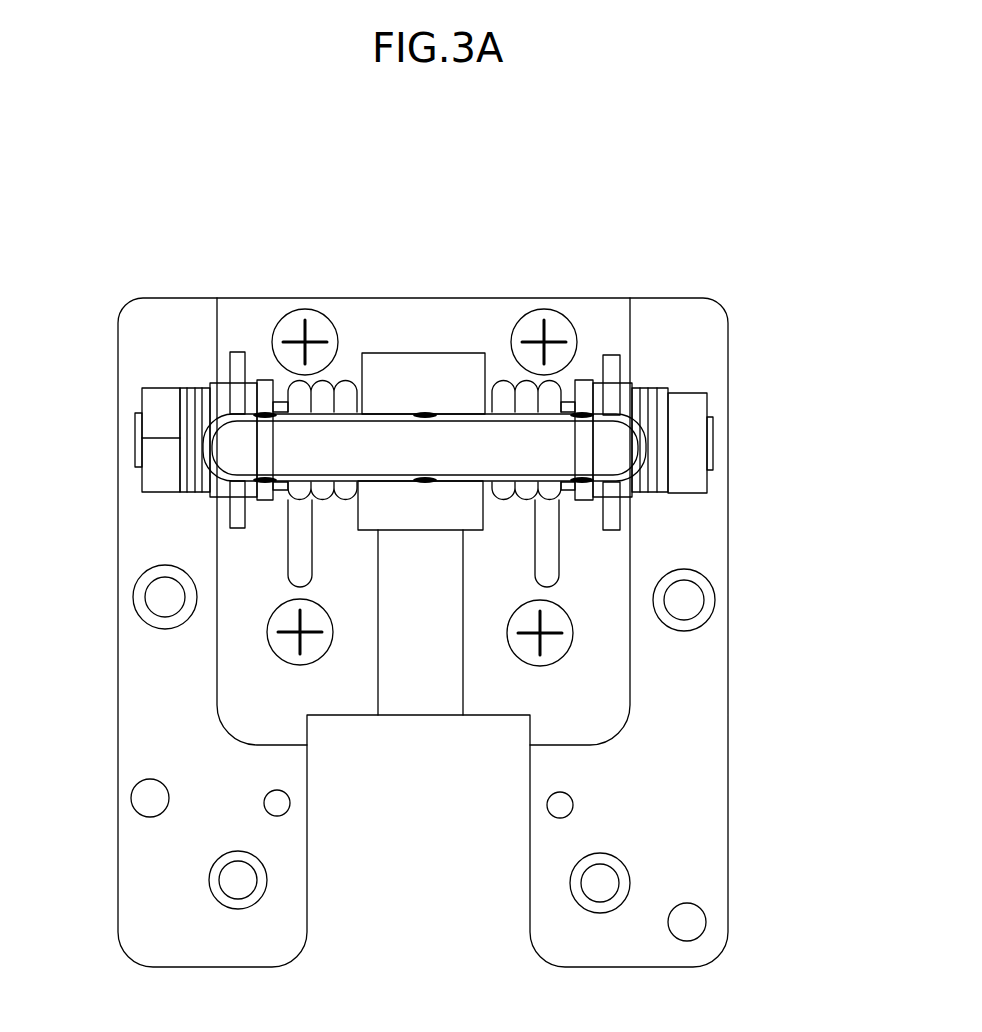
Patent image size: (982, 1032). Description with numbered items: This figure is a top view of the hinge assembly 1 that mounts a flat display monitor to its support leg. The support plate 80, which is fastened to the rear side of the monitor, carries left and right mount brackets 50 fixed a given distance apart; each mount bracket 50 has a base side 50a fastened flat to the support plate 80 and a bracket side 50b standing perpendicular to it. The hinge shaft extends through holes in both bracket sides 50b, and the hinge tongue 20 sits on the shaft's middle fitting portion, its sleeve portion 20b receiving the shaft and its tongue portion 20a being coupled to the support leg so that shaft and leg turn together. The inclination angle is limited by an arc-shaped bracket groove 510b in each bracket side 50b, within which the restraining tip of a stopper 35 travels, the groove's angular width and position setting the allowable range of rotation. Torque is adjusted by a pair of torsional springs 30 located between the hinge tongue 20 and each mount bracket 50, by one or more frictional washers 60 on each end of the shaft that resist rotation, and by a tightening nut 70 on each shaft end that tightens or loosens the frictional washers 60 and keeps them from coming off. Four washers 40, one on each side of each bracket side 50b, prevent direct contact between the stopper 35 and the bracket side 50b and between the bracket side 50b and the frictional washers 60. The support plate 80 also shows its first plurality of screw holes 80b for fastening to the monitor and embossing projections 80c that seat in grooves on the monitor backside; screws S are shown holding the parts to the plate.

The hinge assembly 1 is at (744, 180).
The hinge tongue 20 is at (378, 413).
The tongue portion 20a is at (622, 440).
The sleeve portion 20b is at (455, 370).
The torsional springs 30 is at (526, 396).
The stopper 35 is at (272, 380).
The washers 40 is at (250, 382).
The mount brackets 50 is at (815, 510).
The base side 50a is at (608, 586).
The bracket side 50b is at (610, 516).
The bracket groove 510b is at (615, 402).
The frictional washers 60 is at (750, 360).
The tightening nut 70 is at (158, 457).
The support plate 80 is at (722, 848).
The first plurality of screw holes 80b is at (245, 883).
The embossing projections 80c is at (283, 800).
The screw S is at (510, 634).